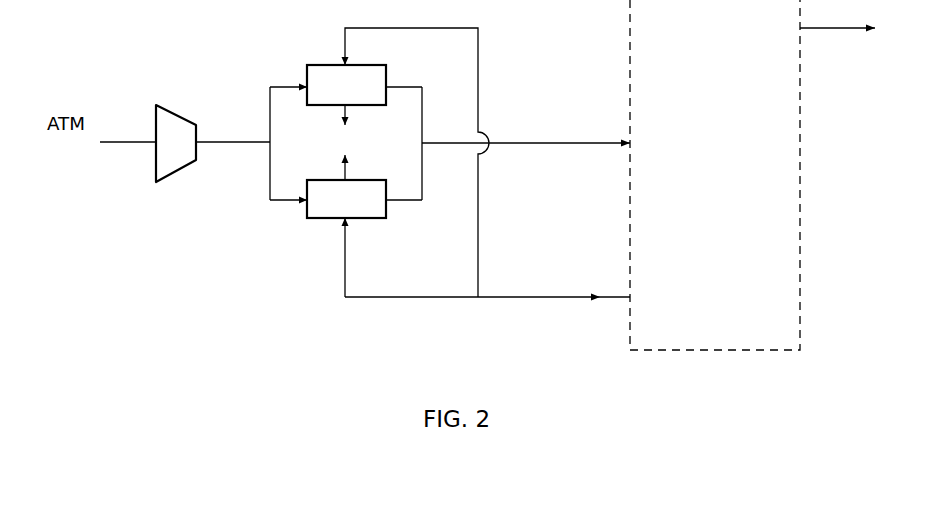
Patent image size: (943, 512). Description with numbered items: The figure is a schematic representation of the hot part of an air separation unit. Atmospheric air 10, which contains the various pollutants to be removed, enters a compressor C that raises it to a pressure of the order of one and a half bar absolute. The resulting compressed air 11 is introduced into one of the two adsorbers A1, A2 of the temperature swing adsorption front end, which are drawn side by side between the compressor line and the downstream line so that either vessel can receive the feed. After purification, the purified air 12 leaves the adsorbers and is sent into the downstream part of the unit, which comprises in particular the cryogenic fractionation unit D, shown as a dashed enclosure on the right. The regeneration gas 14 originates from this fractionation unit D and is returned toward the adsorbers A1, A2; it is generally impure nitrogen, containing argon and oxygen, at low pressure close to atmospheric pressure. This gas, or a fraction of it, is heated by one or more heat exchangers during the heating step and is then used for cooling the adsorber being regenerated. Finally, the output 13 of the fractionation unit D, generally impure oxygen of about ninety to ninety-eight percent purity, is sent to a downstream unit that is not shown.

The atmospheric air 10 is at (123, 154).
The compressor C is at (177, 125).
The compressed air 11 is at (227, 143).
The adsorber A1 is at (322, 78).
The adsorber A2 is at (322, 205).
The purified air 12 is at (532, 144).
The output 13 is at (847, 28).
The regeneration gas 14 is at (546, 298).
The cryogenic fractionation unit D is at (783, 165).